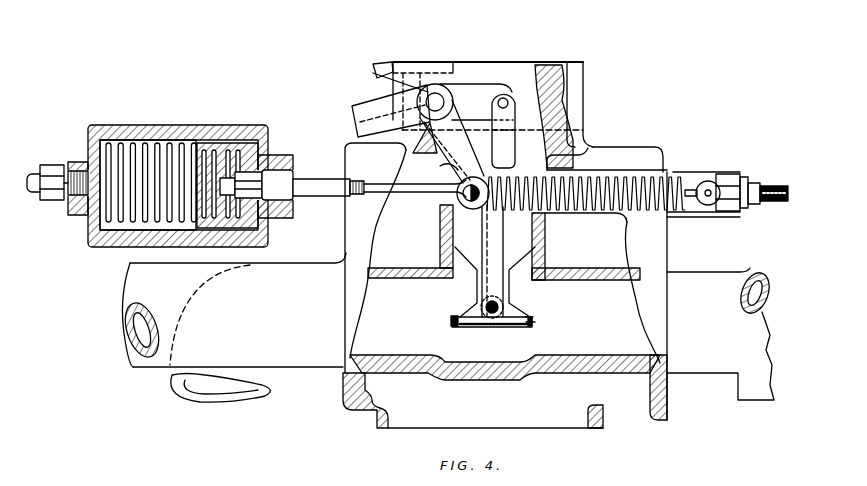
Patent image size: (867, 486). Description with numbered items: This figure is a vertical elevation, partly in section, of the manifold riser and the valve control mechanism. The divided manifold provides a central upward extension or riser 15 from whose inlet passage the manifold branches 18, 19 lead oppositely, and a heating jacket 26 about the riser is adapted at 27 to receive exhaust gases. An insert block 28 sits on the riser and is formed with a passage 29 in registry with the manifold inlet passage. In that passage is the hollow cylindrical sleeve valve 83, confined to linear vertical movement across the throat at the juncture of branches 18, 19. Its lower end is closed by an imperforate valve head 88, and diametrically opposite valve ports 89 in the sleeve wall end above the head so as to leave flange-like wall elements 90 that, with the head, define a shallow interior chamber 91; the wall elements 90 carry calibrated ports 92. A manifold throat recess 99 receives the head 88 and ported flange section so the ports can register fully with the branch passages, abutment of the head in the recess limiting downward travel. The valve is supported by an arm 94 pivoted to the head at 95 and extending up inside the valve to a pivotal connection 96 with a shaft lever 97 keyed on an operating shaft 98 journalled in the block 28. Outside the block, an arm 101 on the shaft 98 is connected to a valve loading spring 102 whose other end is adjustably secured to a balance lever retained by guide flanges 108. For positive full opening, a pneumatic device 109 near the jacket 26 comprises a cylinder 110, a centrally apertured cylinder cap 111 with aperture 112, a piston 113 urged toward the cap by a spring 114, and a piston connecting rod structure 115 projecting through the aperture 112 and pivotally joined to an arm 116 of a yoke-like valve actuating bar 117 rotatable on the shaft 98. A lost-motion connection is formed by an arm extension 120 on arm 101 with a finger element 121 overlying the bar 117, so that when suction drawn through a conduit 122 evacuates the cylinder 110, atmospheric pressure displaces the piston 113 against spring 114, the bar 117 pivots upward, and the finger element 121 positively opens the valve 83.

The upward extension or riser 15 is at (543, 238).
The manifold branch 18 is at (303, 355).
The manifold branch 19 is at (707, 363).
The jacket 26 is at (665, 250).
The exhaust gas inlet 27 is at (603, 426).
The insert member or block 28 is at (577, 93).
The block passage 29 is at (540, 66).
The valve device 83 is at (520, 229).
The valve head 88 is at (468, 328).
The valve port 89 is at (467, 265).
The flange-like wall element 90 is at (534, 316).
The interior chamber 91 is at (511, 316).
The calibrated port 92 is at (536, 319).
The arm 94 is at (495, 231).
The pivotal connection 95 is at (493, 318).
The pivotal connection 96 is at (507, 121).
The shaft lever 97 is at (473, 95).
The operating shaft 98 is at (434, 93).
The manifold throat recess 99 is at (513, 362).
The arm 101 is at (438, 199).
The valve loading spring 102 is at (647, 169).
The guide flange 108 is at (726, 174).
The pneumatic or suction operated device 109 is at (180, 127).
The cylinder 110 is at (183, 140).
The cylinder cap 111 is at (272, 152).
The cap aperture 112 is at (296, 176).
The piston 113 is at (222, 140).
The spring 114 is at (135, 222).
The piston connecting rod structure 115 is at (341, 195).
The arm 116 is at (447, 166).
The valve actuating bar 117 is at (352, 106).
The arm extension 120 is at (412, 72).
The finger element 121 is at (390, 62).
The conduit 122 is at (32, 173).